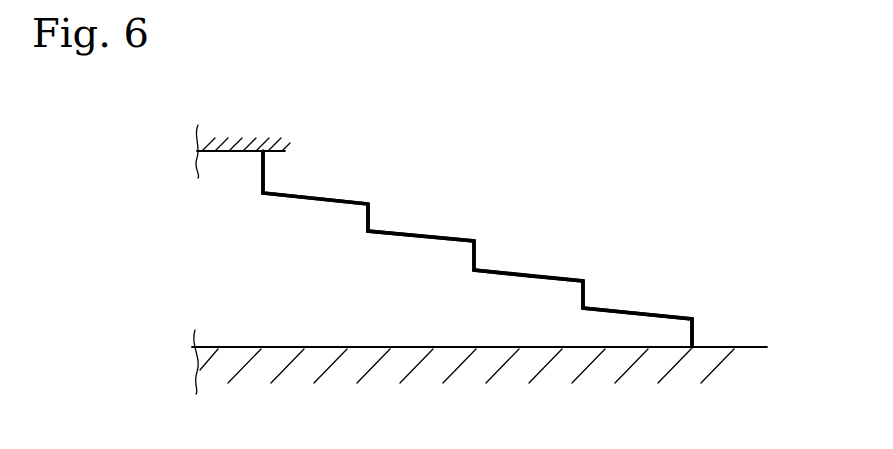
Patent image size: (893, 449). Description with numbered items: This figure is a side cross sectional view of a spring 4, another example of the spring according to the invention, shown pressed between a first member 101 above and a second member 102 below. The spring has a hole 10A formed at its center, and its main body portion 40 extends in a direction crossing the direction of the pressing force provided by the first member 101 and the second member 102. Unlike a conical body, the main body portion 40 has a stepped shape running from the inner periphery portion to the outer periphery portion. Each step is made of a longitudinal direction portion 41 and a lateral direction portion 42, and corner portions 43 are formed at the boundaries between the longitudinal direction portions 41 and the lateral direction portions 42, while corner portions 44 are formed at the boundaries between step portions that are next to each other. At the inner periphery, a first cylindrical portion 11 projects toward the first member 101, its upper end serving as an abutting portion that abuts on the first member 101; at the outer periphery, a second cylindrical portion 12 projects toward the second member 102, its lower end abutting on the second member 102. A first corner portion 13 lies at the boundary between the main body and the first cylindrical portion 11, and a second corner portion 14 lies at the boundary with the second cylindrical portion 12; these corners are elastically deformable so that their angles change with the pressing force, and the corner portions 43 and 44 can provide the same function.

The spring 4 is at (643, 153).
The hole 10A is at (222, 188).
The first member 101 is at (251, 144).
The second member 102 is at (304, 370).
The first cylindrical portion 11 is at (266, 173).
The second cylindrical portion 12 is at (696, 333).
The first corner portion 13 is at (265, 194).
The second corner portion 14 is at (691, 319).
The main body portion 40 is at (390, 232).
The longitudinal direction portion 41 is at (477, 256).
The lateral direction portion 42 is at (542, 275).
The corner portion 43 is at (473, 268).
The corner portion 44 is at (583, 283).